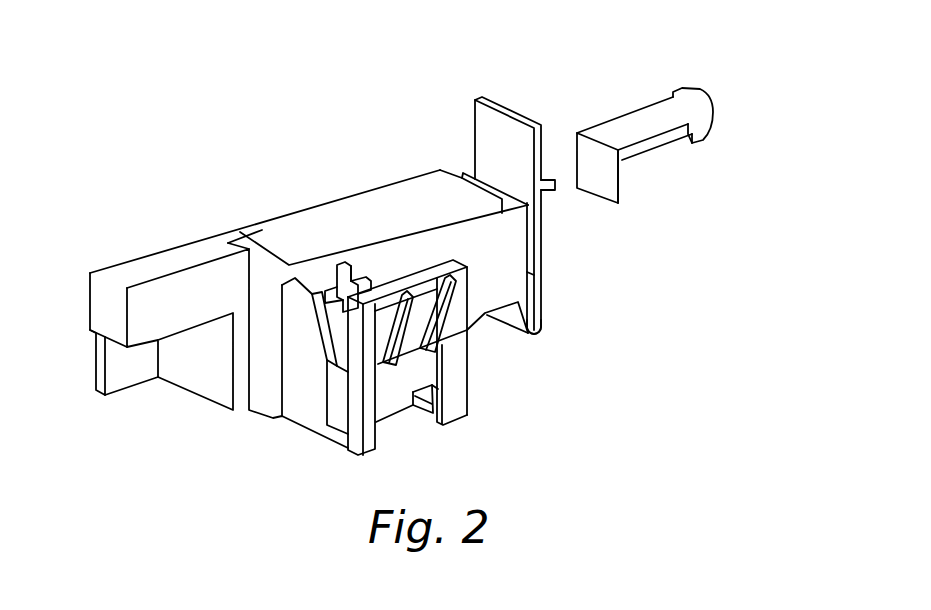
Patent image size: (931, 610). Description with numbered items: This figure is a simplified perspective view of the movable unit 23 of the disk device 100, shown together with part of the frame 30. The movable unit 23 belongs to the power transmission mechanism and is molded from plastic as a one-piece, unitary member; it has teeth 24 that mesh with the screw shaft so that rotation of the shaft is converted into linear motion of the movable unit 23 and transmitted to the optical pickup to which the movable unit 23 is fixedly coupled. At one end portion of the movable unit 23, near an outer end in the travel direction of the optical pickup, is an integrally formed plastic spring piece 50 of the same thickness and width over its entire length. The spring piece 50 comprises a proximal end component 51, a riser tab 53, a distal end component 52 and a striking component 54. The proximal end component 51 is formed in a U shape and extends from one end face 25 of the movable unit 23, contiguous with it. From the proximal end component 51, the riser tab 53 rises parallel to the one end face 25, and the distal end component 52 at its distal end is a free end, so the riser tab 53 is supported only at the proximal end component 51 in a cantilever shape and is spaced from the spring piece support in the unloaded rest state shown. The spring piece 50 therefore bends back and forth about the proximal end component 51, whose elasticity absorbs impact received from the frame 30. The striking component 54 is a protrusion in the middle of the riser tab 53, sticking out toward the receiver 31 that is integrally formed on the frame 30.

The movable unit 23 is at (342, 295).
The teeth 24 is at (378, 368).
The one end face 25 is at (531, 280).
The frame 30 is at (672, 166).
The receiver 31 is at (603, 190).
The spring piece 50 is at (534, 205).
The proximal end component 51 is at (535, 352).
The distal end component 52 is at (520, 112).
The riser tab 53 is at (543, 254).
The striking component 54 is at (556, 181).
The disk device 100 is at (429, 241).